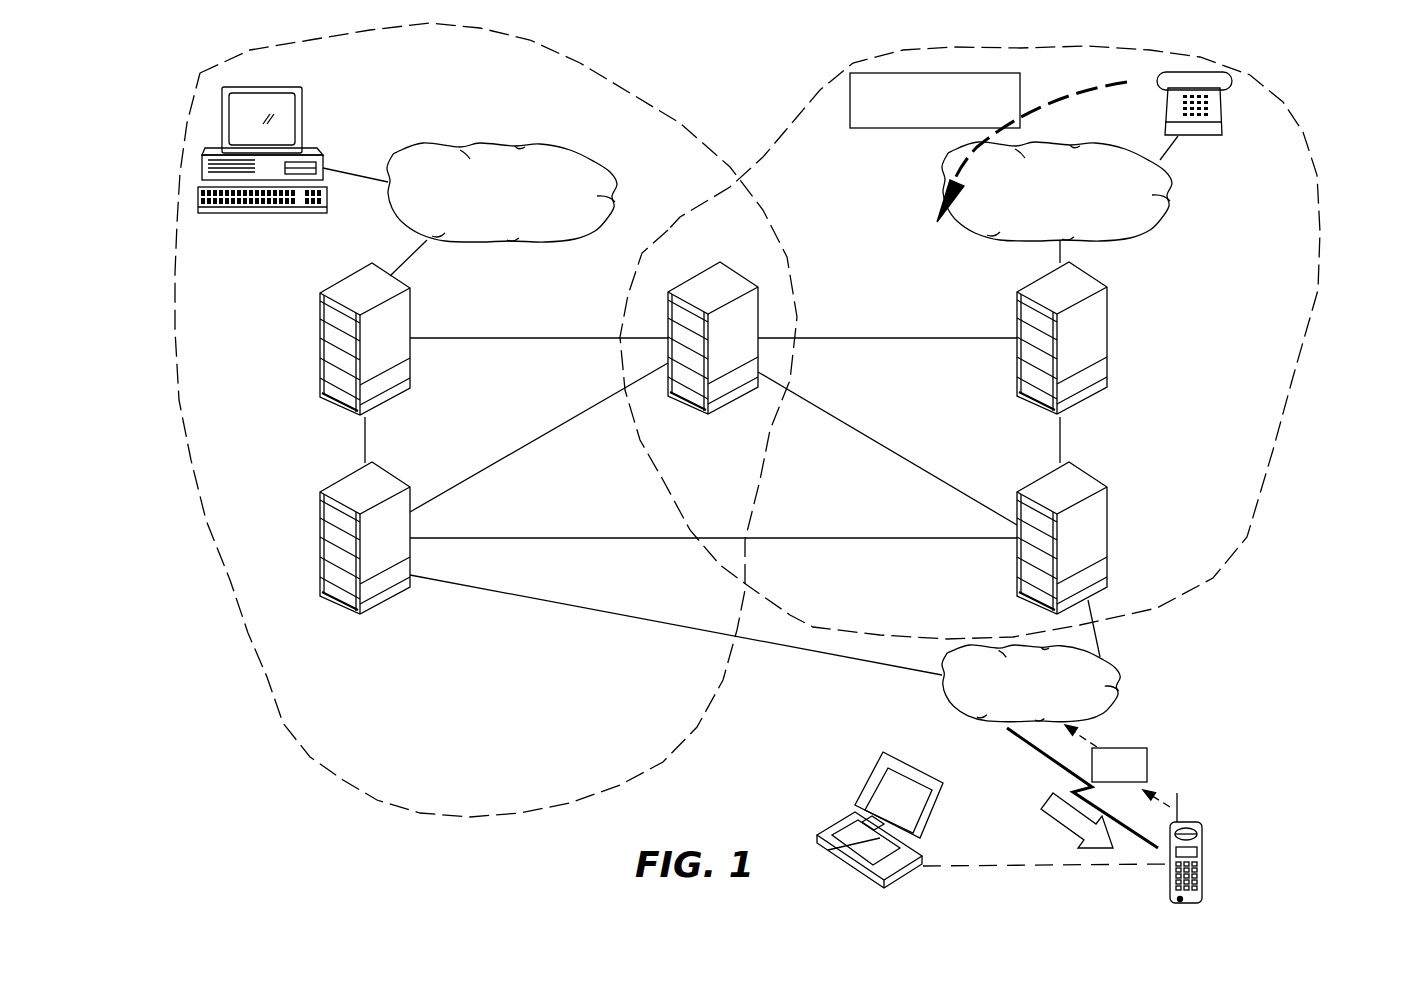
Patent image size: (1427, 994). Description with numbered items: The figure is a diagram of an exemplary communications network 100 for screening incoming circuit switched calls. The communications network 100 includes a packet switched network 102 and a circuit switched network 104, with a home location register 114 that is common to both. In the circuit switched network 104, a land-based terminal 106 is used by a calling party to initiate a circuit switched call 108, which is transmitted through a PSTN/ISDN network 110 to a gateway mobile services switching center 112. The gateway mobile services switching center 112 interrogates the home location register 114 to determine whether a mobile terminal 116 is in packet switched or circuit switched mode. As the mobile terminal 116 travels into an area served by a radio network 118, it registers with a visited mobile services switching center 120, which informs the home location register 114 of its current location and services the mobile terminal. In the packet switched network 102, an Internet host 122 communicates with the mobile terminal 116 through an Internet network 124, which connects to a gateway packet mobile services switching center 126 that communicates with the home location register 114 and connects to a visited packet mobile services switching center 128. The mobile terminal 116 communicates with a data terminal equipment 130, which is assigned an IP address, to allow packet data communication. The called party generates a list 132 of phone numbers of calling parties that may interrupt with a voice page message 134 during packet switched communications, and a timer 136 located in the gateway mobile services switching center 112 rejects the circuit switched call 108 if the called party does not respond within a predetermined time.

The communications network 100 is at (767, 467).
The packet switched network 102 is at (197, 75).
The circuit switched network 104 is at (820, 90).
The land-based terminal 106 is at (1222, 135).
The circuit switched call 108 is at (936, 128).
The network 110 is at (1165, 192).
The gateway mobile services switching center 112 is at (1110, 330).
The home location register 114 is at (741, 277).
The mobile terminal 116 is at (1198, 870).
The radio network 118 is at (1122, 680).
The visited mobile services switching center 120 is at (1107, 568).
The Internet host 122 is at (302, 118).
The Internet network 124 is at (393, 217).
The gateway packet mobile services switching center 126 is at (320, 330).
The visited packet mobile services switching center 128 is at (390, 472).
The data terminal equipment 130 is at (900, 753).
The list 132 is at (1148, 762).
The voice page message 134 is at (1047, 797).
The timer 136 is at (1017, 322).